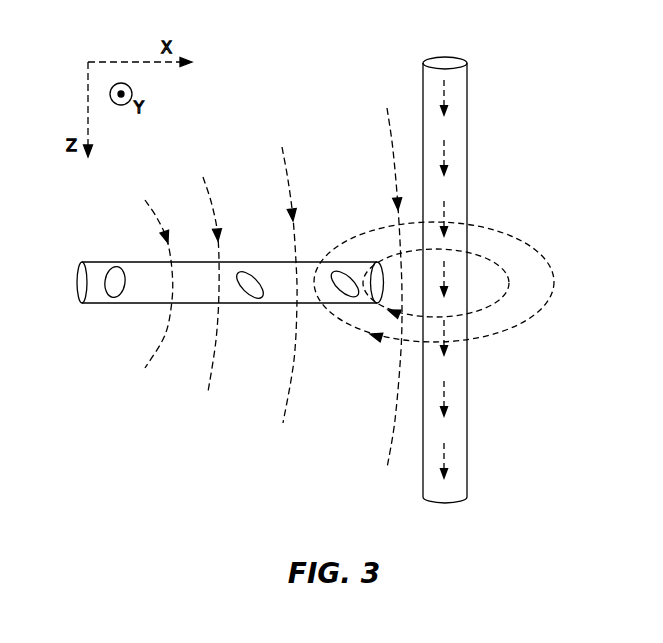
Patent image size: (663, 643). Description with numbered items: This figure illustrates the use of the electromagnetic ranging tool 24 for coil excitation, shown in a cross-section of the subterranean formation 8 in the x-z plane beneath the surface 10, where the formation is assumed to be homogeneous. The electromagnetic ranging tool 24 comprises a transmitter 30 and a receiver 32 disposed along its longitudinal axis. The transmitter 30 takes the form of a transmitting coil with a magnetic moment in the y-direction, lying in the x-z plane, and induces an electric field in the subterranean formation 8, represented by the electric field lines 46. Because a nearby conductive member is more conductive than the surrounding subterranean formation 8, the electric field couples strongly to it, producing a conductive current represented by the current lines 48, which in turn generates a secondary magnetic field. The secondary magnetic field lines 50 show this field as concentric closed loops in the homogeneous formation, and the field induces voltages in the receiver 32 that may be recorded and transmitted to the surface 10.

The subterranean formation 8 is at (166, 451).
The surface 10 is at (467, 272).
The electromagnetic ranging tool 24 is at (92, 262).
The transmitter 30 is at (111, 290).
The receiver 32 is at (248, 280).
The electric field lines 46 is at (208, 187).
The current lines 48 is at (444, 157).
The secondary magnetic field lines 50 is at (540, 315).